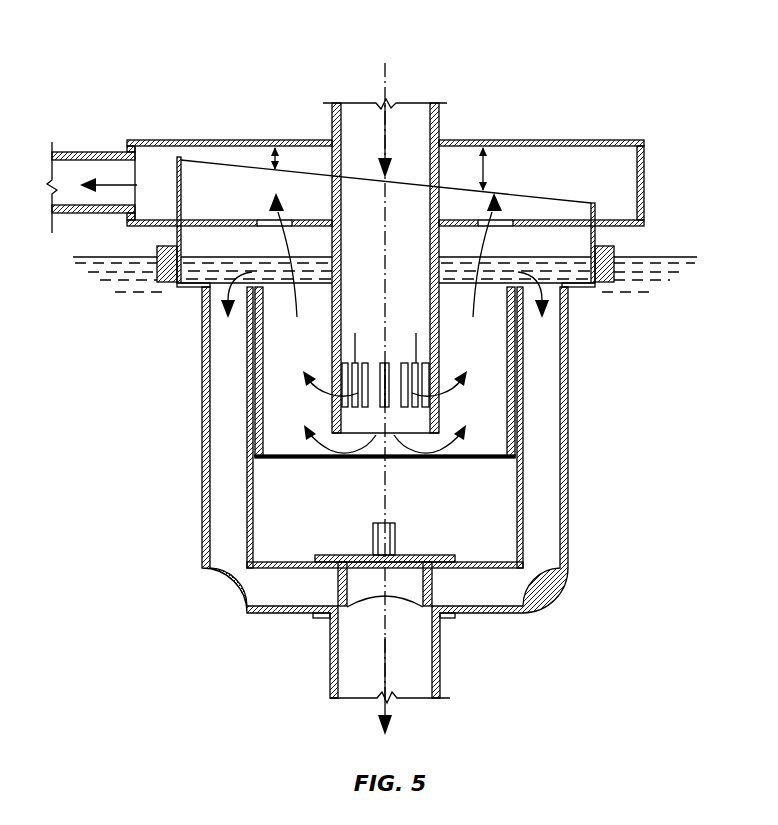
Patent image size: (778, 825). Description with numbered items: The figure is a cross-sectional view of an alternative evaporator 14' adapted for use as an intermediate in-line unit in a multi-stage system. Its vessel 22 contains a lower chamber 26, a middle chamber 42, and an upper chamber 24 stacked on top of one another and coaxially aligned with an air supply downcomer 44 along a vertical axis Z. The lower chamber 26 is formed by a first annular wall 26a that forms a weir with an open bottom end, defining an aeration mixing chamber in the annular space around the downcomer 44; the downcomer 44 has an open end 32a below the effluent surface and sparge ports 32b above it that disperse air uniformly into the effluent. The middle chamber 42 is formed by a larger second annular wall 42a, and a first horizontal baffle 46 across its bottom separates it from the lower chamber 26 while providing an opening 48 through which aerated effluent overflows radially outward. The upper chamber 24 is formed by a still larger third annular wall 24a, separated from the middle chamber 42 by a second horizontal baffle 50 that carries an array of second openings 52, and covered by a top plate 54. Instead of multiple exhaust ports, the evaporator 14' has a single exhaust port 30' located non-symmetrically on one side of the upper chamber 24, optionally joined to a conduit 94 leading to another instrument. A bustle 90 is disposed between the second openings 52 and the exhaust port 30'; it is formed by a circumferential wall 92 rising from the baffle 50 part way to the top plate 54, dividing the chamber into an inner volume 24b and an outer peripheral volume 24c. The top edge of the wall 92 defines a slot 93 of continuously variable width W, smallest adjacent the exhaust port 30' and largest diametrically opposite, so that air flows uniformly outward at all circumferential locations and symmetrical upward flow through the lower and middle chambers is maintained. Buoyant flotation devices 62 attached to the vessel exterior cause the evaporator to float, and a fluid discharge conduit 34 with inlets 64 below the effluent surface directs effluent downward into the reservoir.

The evaporator 14' is at (348, 389).
The vessel 22 is at (403, 167).
The upper chamber 24 is at (612, 183).
The third annular wall 24a is at (642, 150).
The inner volume 24b is at (556, 208).
The outer peripheral volume 24c is at (622, 214).
The lower chamber 26 is at (490, 400).
The first annular wall 26a is at (514, 447).
The exhaust port 30' is at (112, 149).
The open end 32a is at (377, 390).
The sparge ports 32b is at (395, 390).
The fluid discharge conduit 34 is at (200, 534).
The middle chamber 42 is at (610, 288).
The second annular wall 42a is at (582, 274).
The air supply downcomer 44 is at (441, 119).
The first horizontal baffle 46 is at (577, 287).
The opening 48 is at (484, 285).
The second horizontal baffle 50 is at (622, 229).
The second openings 52 is at (509, 221).
The top plate 54 is at (584, 140).
The flotation devices 62 is at (160, 273).
The inlets 64 is at (224, 284).
The bustle 90 is at (165, 162).
The circumferential wall 92 is at (232, 163).
The slot 93 is at (180, 155).
The conduit 94 is at (63, 151).
The width W is at (276, 158).
The vertical axis Z is at (388, 77).